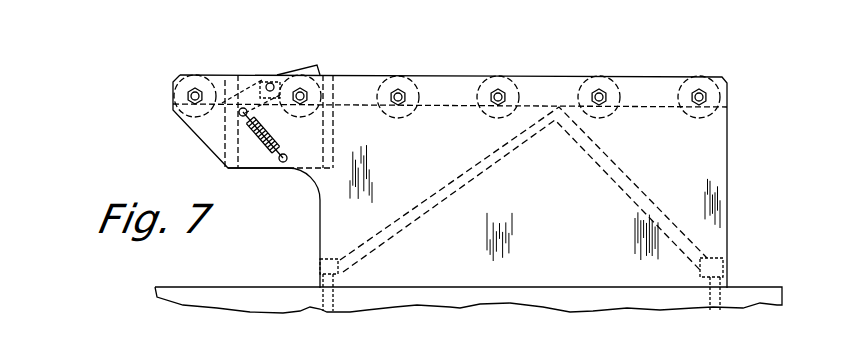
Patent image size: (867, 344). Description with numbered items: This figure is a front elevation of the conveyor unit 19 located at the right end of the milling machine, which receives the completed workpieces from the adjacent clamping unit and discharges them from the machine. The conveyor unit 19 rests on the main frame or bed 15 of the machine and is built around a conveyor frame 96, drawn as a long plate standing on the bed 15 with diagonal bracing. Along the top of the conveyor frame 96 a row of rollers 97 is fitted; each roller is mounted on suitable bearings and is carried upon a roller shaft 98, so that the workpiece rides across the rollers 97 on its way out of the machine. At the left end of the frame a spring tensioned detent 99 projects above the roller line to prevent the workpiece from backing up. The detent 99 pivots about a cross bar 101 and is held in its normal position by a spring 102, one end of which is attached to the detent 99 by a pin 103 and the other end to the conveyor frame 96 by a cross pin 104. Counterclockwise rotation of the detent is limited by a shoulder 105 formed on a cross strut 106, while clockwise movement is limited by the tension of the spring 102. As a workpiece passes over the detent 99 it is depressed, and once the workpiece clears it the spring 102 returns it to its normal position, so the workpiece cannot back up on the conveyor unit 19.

The bed 15 is at (262, 264).
The conveyor unit 19 is at (748, 137).
The conveyor frame 96 is at (723, 190).
The rollers 97 is at (198, 74).
The roller shafts 98 is at (498, 102).
The spring tensioned detent 99 is at (320, 65).
The cross bar 101 is at (272, 84).
The spring 102 is at (268, 126).
The pin 103 is at (243, 138).
The cross pin 104 is at (290, 172).
The shoulder 105 is at (233, 108).
The cross strut 106 is at (239, 170).